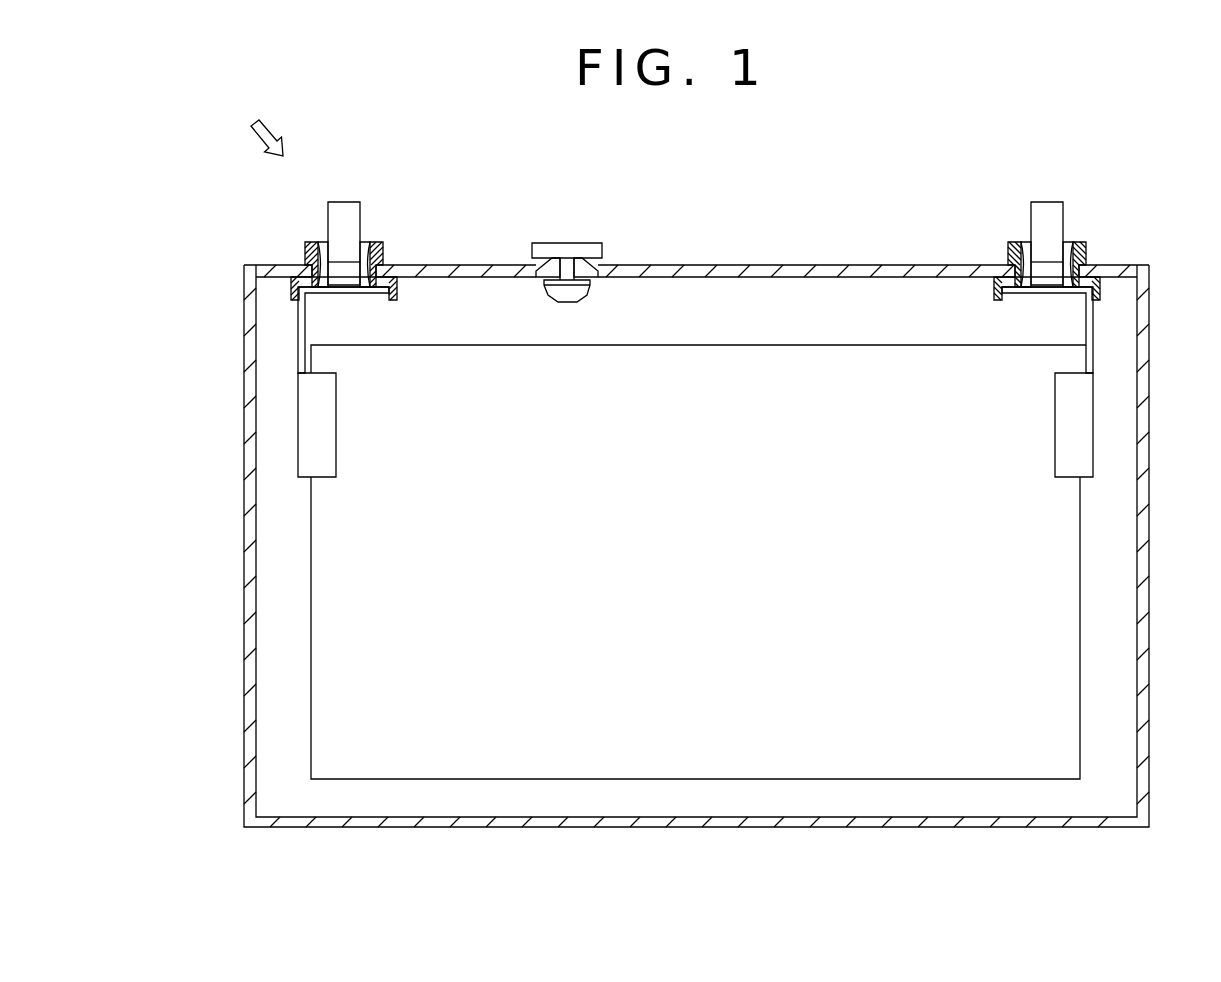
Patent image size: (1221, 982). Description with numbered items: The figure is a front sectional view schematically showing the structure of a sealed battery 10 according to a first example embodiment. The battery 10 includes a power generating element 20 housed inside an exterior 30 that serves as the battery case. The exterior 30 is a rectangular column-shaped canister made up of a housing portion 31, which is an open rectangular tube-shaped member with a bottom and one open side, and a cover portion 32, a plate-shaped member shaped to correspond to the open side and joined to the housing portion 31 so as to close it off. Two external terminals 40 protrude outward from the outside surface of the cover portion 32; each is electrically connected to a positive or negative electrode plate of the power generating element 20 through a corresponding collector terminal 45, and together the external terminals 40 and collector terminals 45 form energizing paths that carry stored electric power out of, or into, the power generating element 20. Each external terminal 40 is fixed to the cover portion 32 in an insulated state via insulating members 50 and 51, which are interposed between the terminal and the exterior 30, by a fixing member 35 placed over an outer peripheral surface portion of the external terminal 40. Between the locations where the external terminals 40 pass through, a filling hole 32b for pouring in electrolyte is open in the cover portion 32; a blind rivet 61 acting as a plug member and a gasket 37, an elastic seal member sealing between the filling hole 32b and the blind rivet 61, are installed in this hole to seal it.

The battery 10 is at (257, 122).
The power generating element 20 is at (347, 510).
The exterior 30 is at (639, 516).
The housing portion 31 is at (247, 293).
The cover portion 32 is at (267, 268).
The filling hole 32b is at (575, 292).
The fixing member 35 is at (384, 253).
The gasket 37 is at (597, 263).
The external terminal 40 is at (352, 220).
The collector terminal 45 is at (302, 328).
The insulating member 50 is at (365, 243).
The insulating member 51 is at (397, 285).
The blind rivet 61 is at (583, 250).